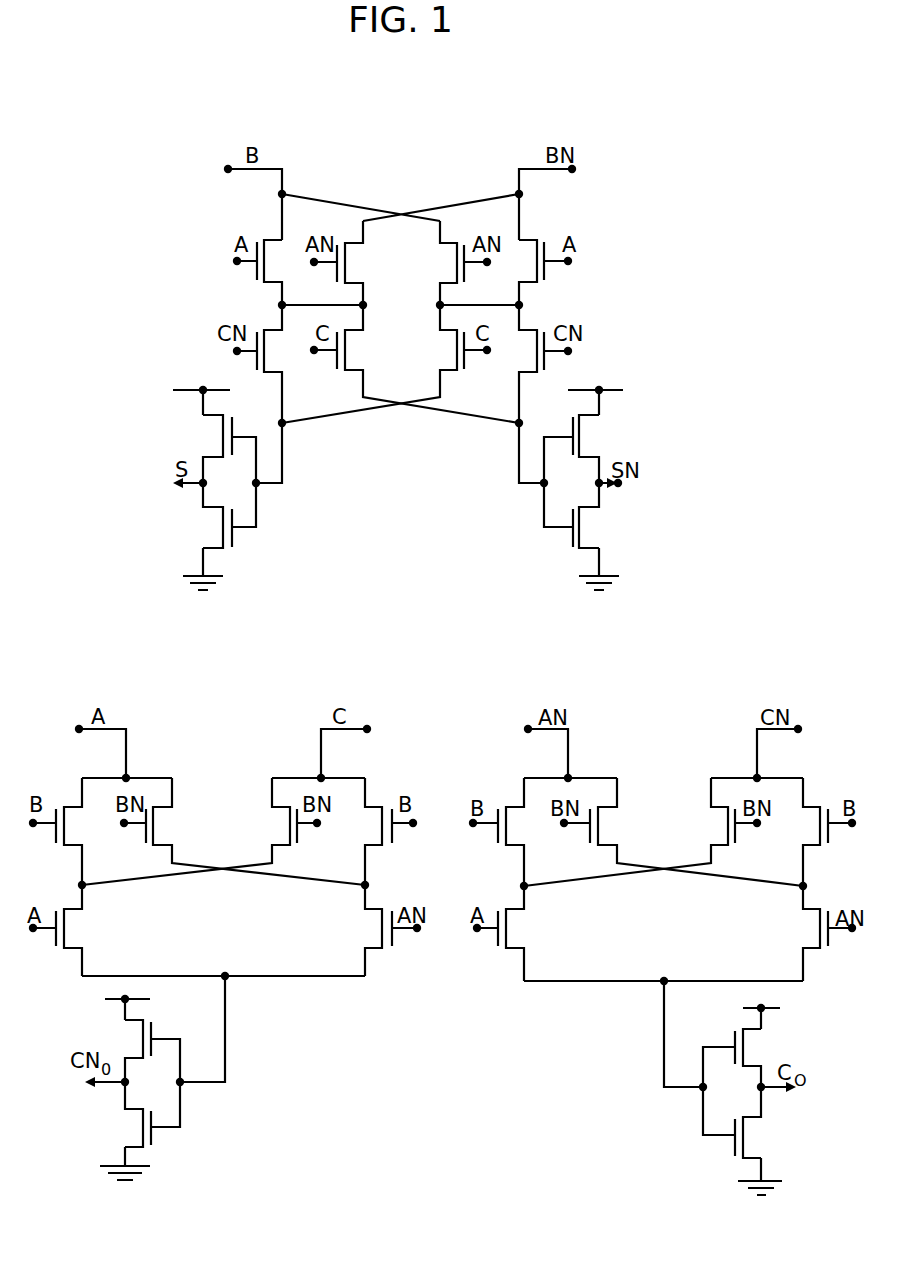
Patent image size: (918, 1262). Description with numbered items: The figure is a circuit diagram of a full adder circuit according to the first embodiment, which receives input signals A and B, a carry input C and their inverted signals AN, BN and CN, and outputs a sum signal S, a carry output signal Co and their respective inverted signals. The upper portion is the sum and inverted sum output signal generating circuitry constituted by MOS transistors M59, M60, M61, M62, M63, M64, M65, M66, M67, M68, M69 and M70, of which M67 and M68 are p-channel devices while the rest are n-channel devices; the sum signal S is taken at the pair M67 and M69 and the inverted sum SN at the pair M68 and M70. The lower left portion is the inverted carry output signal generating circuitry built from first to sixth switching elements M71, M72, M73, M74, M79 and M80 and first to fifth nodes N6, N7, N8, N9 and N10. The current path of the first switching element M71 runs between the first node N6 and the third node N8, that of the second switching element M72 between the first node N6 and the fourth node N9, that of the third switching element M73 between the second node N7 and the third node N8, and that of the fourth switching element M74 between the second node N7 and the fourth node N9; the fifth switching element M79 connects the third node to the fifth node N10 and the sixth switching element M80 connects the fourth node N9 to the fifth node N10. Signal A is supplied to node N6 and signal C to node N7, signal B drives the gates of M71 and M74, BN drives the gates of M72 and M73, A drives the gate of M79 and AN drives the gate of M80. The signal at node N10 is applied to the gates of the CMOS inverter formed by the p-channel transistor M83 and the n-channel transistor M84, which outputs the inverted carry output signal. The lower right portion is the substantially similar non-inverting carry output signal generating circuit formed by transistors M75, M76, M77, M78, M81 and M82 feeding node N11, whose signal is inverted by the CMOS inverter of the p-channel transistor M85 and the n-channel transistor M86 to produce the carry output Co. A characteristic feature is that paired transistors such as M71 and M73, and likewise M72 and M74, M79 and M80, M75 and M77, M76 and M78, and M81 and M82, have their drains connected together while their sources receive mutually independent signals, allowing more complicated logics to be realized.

The MOS transistor M59 is at (251, 275).
The MOS transistor M60 is at (351, 263).
The MOS transistor M61 is at (450, 263).
The MOS transistor M62 is at (558, 276).
The MOS transistor M63 is at (244, 364).
The MOS transistor M64 is at (414, 364).
The MOS transistor M65 is at (386, 364).
The MOS transistor M66 is at (558, 364).
The p-channel MOS transistor M67 is at (213, 437).
The p-channel MOS transistor M68 is at (590, 437).
The MOS transistor M69 is at (215, 515).
The MOS transistor M70 is at (587, 515).
The first switching element M71 is at (72, 831).
The second switching element M72 is at (244, 831).
The third switching element M73 is at (199, 831).
The fourth switching element M74 is at (374, 831).
The MOS transistor M75 is at (513, 832).
The MOS transistor M76 is at (683, 832).
The MOS transistor M77 is at (640, 832).
The MOS transistor M78 is at (812, 832).
The fifth switching element M79 is at (72, 930).
The sixth switching element M80 is at (371, 930).
The MOS transistor M81 is at (515, 933).
The MOS transistor M82 is at (807, 933).
The p-channel MOS transistor M83 is at (128, 1039).
The MOS transistor M84 is at (131, 1114).
The p-channel MOS transistor M85 is at (760, 1047).
The MOS transistor M86 is at (749, 1122).
The first node N6 is at (129, 777).
The second node N7 is at (325, 776).
The third node N8 is at (79, 885).
The fourth node N9 is at (370, 884).
The fifth node N10 is at (229, 981).
The node N11 is at (663, 986).